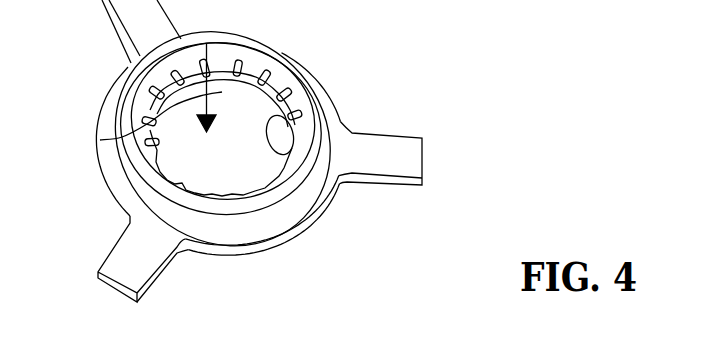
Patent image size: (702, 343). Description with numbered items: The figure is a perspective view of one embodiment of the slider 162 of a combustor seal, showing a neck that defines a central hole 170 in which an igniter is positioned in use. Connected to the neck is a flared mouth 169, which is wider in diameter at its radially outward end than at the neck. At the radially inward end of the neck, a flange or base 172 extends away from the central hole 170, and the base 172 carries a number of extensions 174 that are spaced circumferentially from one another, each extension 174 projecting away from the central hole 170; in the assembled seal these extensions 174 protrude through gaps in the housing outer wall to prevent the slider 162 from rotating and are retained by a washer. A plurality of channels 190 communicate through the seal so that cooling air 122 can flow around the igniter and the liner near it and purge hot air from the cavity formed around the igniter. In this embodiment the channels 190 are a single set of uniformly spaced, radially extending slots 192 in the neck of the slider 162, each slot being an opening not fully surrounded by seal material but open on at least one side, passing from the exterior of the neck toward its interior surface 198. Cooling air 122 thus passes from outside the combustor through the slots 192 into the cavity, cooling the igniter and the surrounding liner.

The cooling air 122 is at (119, 139).
The slider 162 is at (227, 160).
The flared mouth 169 is at (292, 80).
The central hole 170 is at (234, 171).
The base 172 is at (320, 194).
The extension 174 is at (150, 13).
The channels 190 is at (157, 103).
The slots 192 is at (238, 80).
The interior surface 198 is at (324, 151).